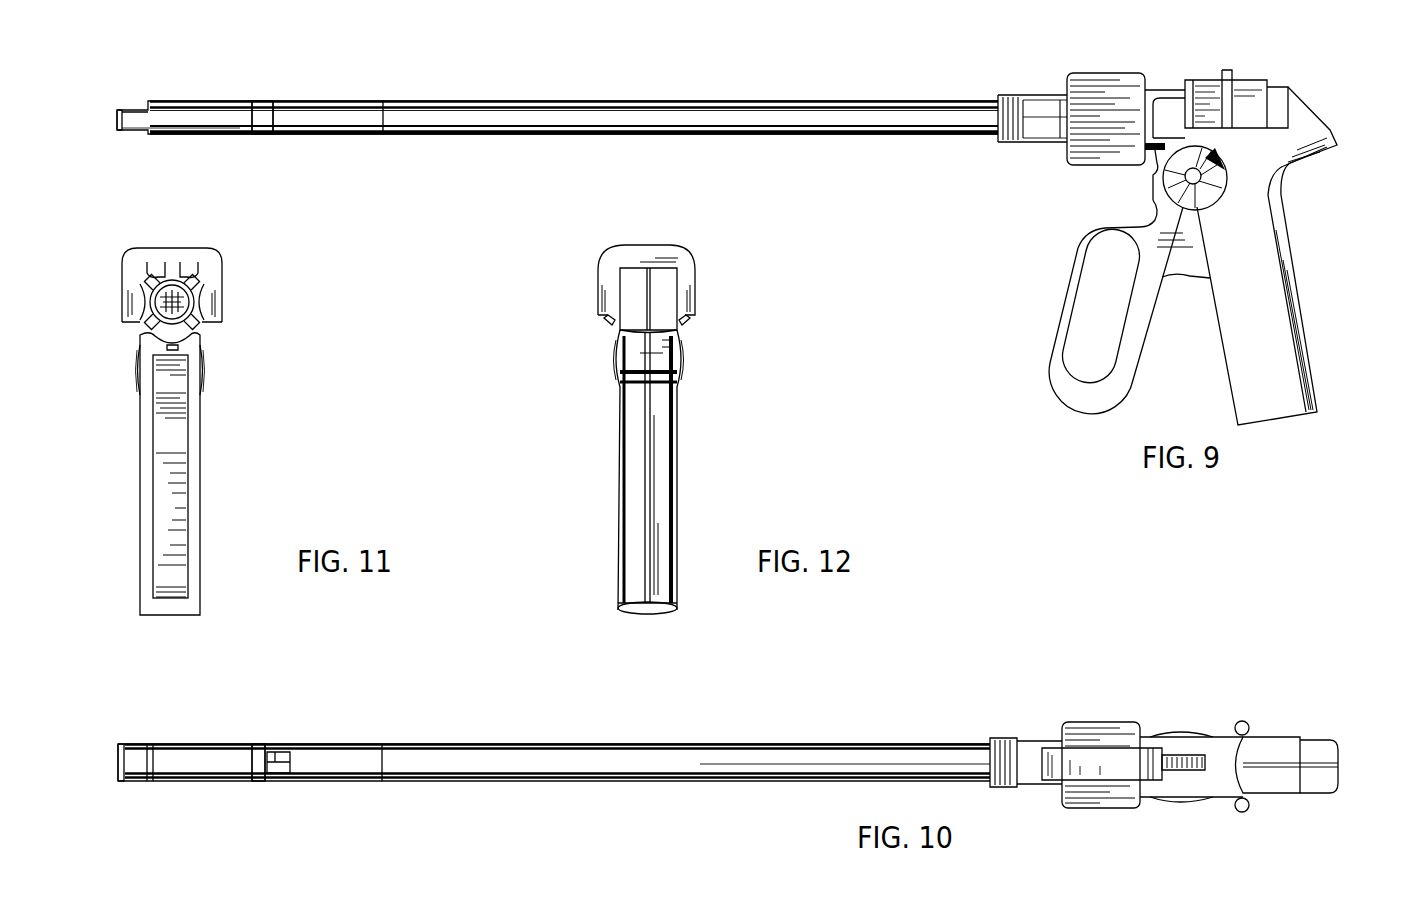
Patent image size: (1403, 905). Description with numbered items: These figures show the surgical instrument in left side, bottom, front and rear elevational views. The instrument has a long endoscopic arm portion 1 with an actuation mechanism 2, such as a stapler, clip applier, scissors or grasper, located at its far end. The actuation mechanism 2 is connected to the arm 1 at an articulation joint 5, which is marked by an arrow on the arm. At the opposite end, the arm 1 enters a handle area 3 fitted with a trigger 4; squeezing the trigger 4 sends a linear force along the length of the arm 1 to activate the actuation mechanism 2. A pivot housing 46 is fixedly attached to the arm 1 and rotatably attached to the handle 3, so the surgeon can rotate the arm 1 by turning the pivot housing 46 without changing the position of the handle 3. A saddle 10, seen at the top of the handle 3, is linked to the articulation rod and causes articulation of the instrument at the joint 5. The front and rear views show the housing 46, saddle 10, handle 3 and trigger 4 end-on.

In FIG. 9, the endoscopic arm portion 1 is at (707, 117).
In FIG. 10, the endoscopic arm portion 1 is at (665, 757).
In FIG. 9, the actuation mechanism 2 is at (128, 122).
In FIG. 10, the actuation mechanism 2 is at (195, 760).
In FIG. 9, the handle area 3 is at (1253, 308).
In FIG. 11, the handle area 3 is at (190, 610).
In FIG. 12, the handle area 3 is at (663, 483).
In FIG. 10, the handle area 3 is at (1274, 752).
In FIG. 9, the trigger 4 is at (1070, 308).
In FIG. 11, the trigger 4 is at (175, 509).
In FIG. 9, the articulation mechanism or joint 5 is at (253, 142).
In FIG. 10, the articulation mechanism or joint 5 is at (253, 803).
In FIG. 9, the saddle 10 is at (1250, 82).
In FIG. 12, the saddle 10 is at (690, 270).
In FIG. 9, the pivot housing 46 is at (1125, 83).
In FIG. 11, the pivot housing 46 is at (210, 328).
In FIG. 10, the pivot housing 46 is at (1126, 735).